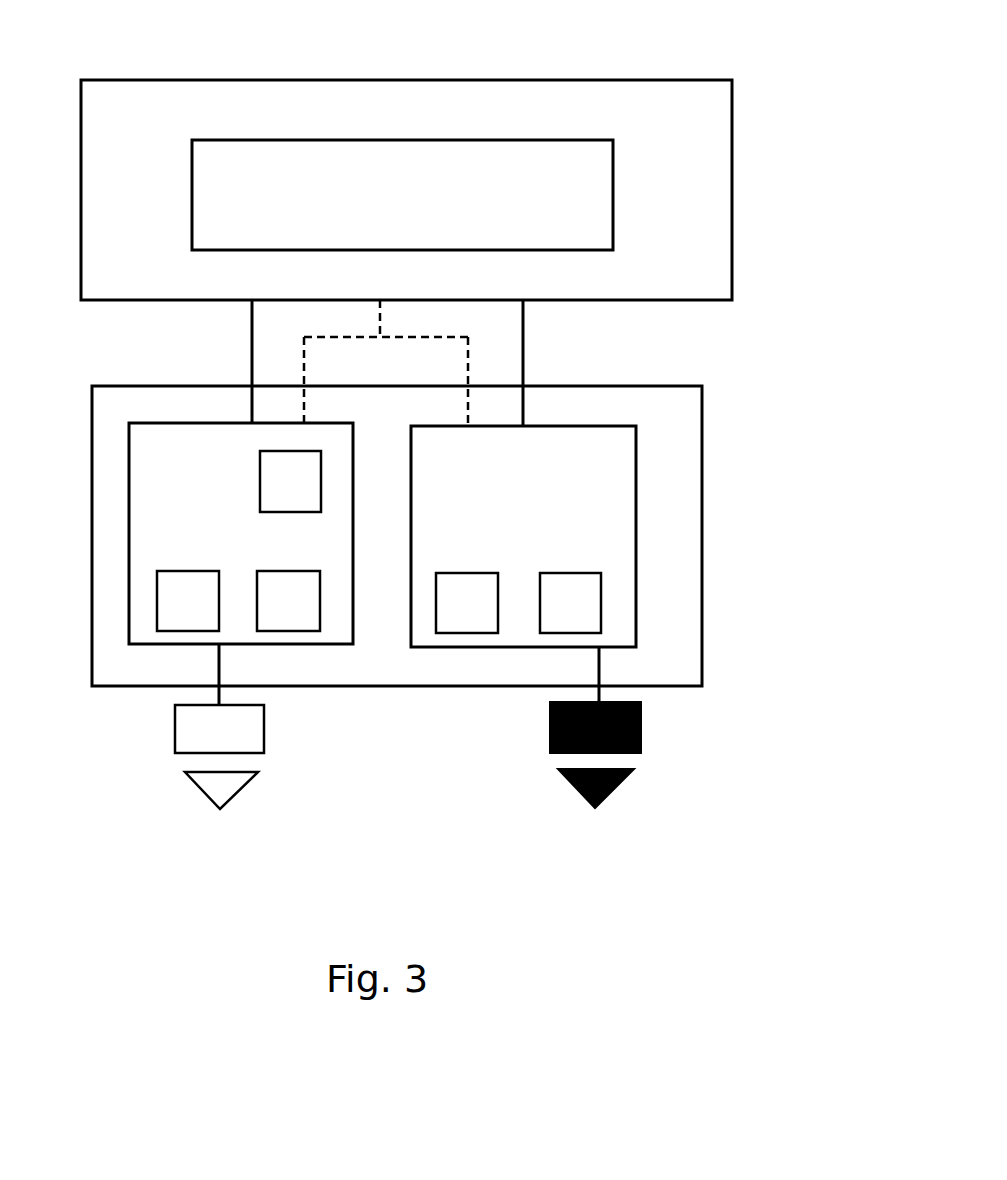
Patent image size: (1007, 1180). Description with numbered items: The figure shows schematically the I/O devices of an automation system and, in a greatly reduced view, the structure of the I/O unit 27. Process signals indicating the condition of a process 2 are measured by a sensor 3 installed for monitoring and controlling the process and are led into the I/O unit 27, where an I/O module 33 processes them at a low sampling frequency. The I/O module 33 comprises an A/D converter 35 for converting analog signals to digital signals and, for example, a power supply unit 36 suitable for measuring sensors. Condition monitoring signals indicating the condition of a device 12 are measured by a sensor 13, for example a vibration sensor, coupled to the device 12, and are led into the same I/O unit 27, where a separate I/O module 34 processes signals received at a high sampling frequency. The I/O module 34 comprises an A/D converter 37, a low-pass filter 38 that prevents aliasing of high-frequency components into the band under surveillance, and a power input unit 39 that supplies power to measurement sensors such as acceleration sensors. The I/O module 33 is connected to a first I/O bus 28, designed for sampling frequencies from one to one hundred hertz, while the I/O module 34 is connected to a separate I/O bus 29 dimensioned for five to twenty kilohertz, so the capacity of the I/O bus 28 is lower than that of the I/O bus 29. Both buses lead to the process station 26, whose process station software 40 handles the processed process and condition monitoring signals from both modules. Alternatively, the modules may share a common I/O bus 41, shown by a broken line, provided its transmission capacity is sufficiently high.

The process station 26 is at (732, 183).
The process station software 40 is at (600, 138).
The I/O bus 29 is at (252, 353).
The first I/O bus 28 is at (523, 352).
The I/O bus 41 is at (467, 370).
The I/O unit 27 is at (702, 620).
The I/O module 34 is at (142, 487).
The I/O module 33 is at (636, 471).
The power input unit 39 is at (274, 497).
The low-pass filter 38 is at (172, 615).
The A/D converter 37 is at (273, 615).
The A/D converter 35 is at (451, 619).
The power supply unit 36 is at (554, 619).
The sensor 13 is at (173, 728).
The device 12 is at (202, 793).
The sensor 3 is at (641, 728).
The process 2 is at (627, 782).